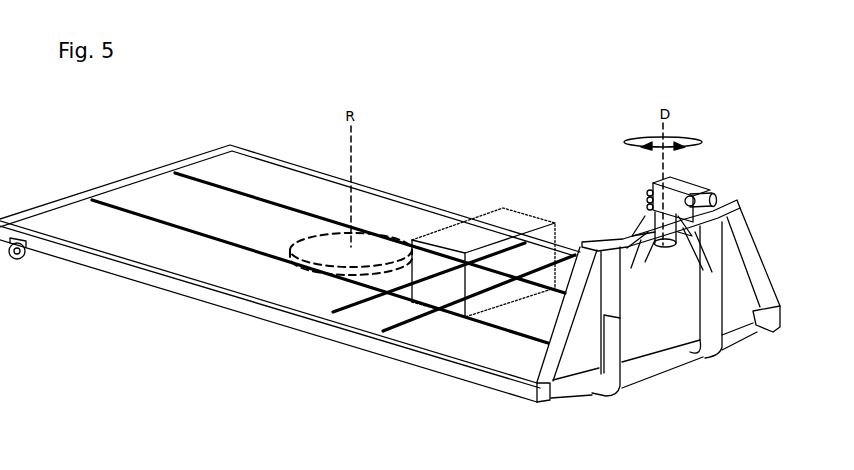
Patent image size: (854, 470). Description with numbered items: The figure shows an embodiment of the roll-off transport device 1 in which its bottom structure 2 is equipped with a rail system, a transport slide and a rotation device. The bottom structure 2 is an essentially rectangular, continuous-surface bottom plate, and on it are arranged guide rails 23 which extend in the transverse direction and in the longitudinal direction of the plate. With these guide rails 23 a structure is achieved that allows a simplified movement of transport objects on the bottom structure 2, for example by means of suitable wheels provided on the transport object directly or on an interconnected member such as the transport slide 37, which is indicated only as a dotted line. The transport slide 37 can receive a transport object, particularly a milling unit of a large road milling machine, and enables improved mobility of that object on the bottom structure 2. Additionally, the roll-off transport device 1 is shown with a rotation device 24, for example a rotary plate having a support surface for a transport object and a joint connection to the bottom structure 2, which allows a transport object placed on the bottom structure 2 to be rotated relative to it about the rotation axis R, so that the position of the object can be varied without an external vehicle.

The roll-off transport device 1 is at (514, 71).
The bottom structure 2 is at (168, 243).
The guide rail 23 is at (107, 202).
The rotation device 24 is at (386, 238).
The transport slide 37 is at (466, 252).